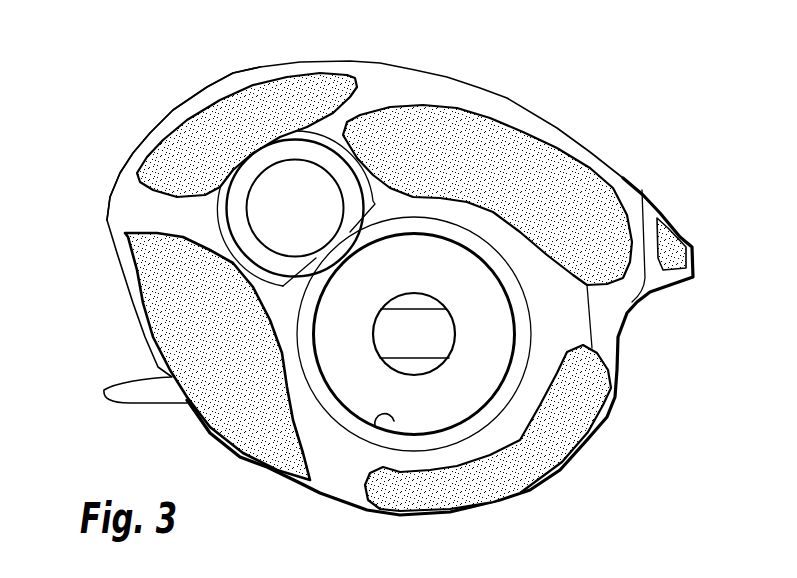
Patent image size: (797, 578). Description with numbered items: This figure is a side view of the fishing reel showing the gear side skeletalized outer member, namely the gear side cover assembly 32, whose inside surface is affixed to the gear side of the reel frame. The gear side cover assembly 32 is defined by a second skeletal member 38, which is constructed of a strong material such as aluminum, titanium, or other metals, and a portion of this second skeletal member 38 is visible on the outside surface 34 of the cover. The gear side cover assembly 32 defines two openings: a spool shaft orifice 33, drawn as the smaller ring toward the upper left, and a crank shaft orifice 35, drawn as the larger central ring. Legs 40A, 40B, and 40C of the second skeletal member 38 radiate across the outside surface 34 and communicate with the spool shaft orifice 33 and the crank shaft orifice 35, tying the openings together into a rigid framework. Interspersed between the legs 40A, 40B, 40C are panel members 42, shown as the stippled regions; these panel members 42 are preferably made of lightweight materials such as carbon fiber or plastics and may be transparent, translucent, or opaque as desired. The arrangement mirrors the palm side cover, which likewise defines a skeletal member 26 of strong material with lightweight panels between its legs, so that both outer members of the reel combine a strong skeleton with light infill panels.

The gear side cover assembly 32 is at (550, 108).
The spool shaft orifice 33 is at (250, 213).
The outside surface 34 is at (555, 268).
The crank shaft orifice 35 is at (396, 423).
The skeletal member 26 is at (537, 340).
The second skeletal member 38 is at (607, 322).
The leg 40A is at (145, 210).
The leg 40B is at (352, 112).
The leg 40C is at (568, 303).
The panel members 42 is at (200, 127).